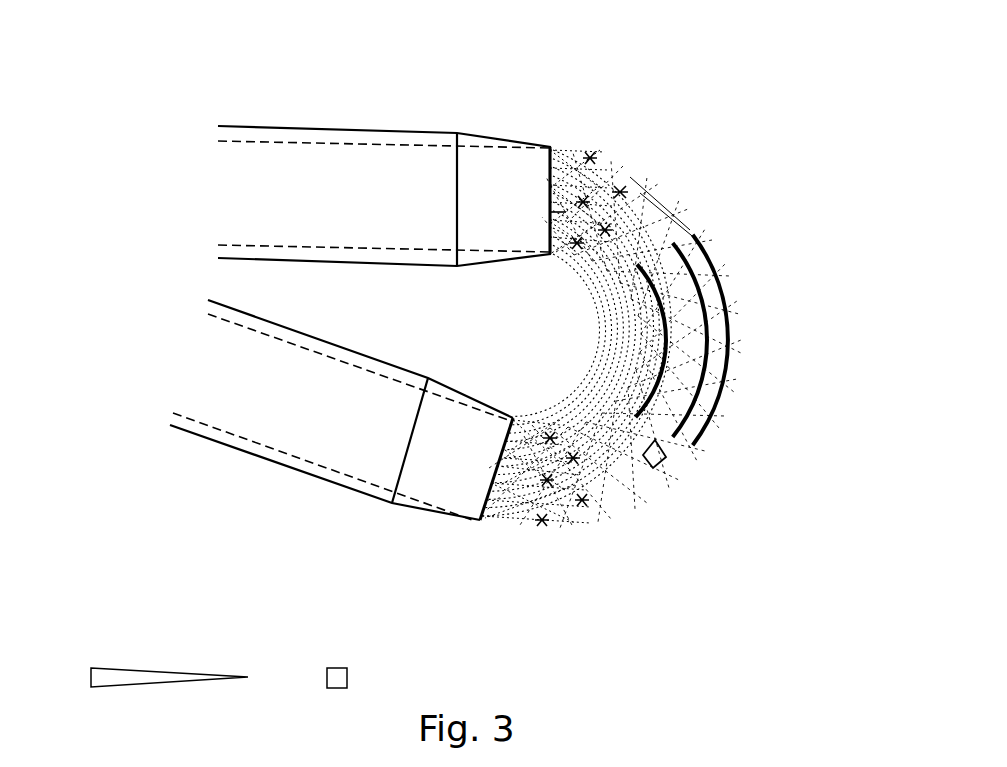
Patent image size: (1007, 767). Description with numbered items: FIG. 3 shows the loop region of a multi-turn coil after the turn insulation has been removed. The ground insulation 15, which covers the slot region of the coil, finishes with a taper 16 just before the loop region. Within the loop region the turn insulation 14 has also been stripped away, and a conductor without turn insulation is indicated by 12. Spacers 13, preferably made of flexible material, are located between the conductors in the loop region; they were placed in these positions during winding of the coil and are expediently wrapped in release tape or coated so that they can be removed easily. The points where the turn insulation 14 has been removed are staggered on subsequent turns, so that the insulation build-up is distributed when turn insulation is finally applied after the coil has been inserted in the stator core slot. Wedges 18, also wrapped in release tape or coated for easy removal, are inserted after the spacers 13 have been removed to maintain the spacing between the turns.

The conductor without turn insulation 12 is at (692, 220).
The spacers 13 is at (733, 313).
The turn insulation 14 is at (572, 158).
The ground insulation 15 is at (215, 452).
The taper 16 is at (440, 485).
The wedges 18 is at (660, 460).